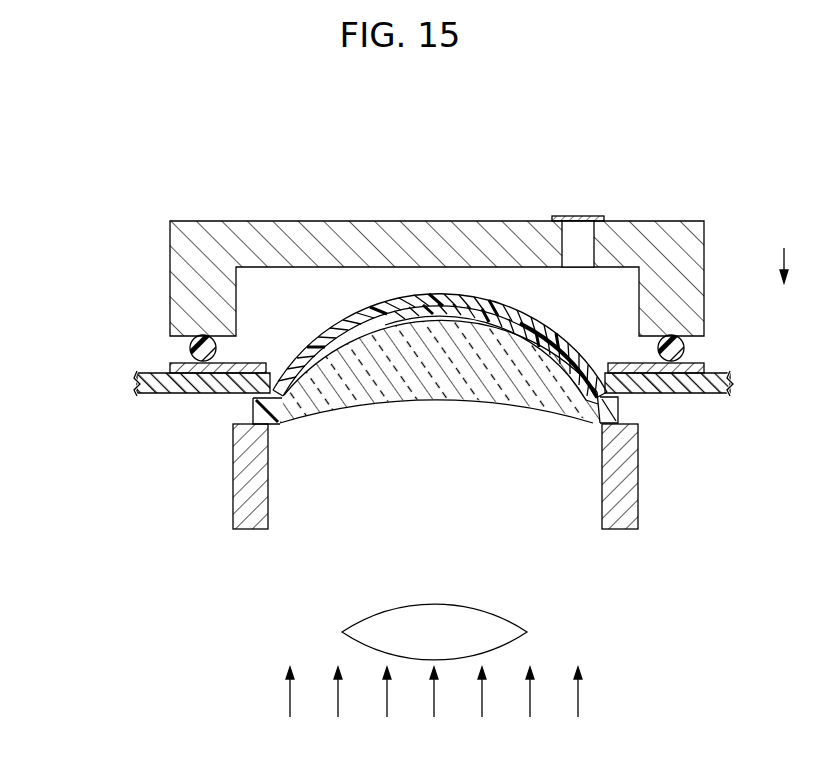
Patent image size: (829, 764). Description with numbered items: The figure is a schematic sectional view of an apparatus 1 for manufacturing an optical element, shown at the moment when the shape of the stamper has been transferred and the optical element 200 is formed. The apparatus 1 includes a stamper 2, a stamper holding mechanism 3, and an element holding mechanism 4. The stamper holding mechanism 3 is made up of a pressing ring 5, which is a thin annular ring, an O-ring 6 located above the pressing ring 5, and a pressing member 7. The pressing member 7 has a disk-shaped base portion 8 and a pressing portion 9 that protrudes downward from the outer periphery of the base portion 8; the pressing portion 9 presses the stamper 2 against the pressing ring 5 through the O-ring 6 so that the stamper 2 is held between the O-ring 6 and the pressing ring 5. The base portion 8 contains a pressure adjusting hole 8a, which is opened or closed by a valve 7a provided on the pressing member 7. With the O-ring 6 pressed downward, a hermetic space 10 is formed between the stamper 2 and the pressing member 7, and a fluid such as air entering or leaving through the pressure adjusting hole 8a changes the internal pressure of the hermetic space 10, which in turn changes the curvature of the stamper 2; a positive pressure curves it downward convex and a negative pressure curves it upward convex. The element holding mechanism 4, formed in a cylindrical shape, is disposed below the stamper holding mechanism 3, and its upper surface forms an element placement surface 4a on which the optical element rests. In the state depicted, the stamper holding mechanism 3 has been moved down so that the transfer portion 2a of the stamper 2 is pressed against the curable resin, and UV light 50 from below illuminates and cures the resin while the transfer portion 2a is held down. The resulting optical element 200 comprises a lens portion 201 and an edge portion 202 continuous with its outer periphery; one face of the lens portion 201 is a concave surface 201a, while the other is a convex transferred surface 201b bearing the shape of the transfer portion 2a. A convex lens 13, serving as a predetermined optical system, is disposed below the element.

The apparatus for manufacturing an optical element 1 is at (648, 166).
The stamper 2 is at (726, 363).
The transfer portion 2a is at (617, 402).
The stamper holding mechanism 3 is at (50, 233).
The element holding mechanism 4 is at (622, 493).
The element placement surface 4a is at (613, 400).
The pressing ring 5 is at (178, 401).
The O-ring 6 is at (190, 350).
The pressing member 7 is at (176, 265).
The valve 7a is at (566, 218).
The base portion 8 is at (238, 221).
The pressure adjusting hole 8a is at (580, 228).
The pressing portion 9 is at (688, 300).
The hermetic space 10 is at (274, 310).
The convex lens 13 is at (505, 628).
The UV light 50 is at (338, 697).
The optical element 200 is at (528, 402).
The lens portion 201 is at (370, 400).
The concave surface 201a is at (425, 400).
The transferred surface 201b is at (472, 302).
The edge portion 202 is at (255, 410).